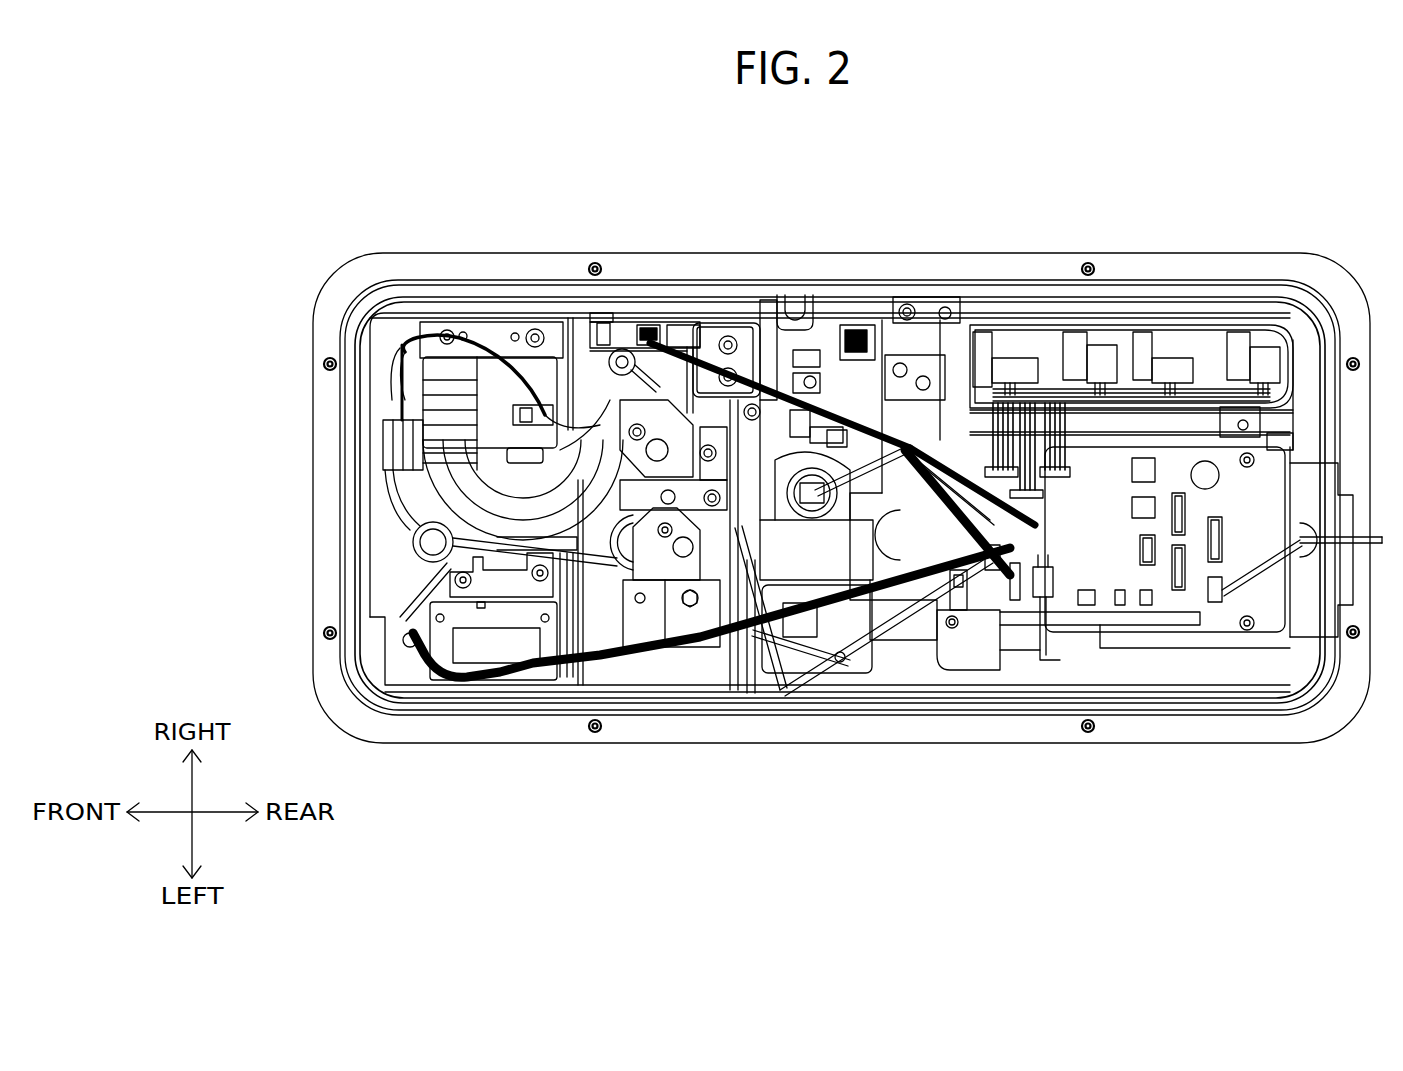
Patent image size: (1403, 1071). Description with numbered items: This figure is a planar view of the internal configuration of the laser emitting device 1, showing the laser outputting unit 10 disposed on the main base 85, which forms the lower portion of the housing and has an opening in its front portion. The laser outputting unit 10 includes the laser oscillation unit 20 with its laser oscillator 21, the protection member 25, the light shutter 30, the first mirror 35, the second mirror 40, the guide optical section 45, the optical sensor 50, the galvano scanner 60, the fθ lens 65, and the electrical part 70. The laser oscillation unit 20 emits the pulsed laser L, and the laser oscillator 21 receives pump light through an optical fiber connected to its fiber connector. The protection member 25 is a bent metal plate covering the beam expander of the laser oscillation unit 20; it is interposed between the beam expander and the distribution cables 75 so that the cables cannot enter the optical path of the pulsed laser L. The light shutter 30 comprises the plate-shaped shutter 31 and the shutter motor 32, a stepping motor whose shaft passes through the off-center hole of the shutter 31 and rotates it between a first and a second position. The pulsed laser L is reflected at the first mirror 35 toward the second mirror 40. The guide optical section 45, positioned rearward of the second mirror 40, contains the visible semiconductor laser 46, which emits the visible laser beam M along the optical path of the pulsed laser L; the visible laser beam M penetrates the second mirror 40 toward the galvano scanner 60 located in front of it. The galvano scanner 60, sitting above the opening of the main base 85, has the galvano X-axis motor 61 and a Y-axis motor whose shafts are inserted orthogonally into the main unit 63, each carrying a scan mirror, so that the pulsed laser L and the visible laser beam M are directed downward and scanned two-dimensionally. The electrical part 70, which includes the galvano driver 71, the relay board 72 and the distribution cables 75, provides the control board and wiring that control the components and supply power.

The laser emitting device 1 is at (1314, 203).
The laser outputting unit 10 is at (888, 560).
The laser oscillation unit 20 is at (1082, 637).
The laser oscillator 21 is at (1012, 600).
The protection member 25 is at (990, 575).
The light shutter 30 is at (762, 700).
The shutter 31 is at (740, 640).
The shutter motor 32 is at (790, 690).
The first mirror 35 is at (658, 557).
The second mirror 40 is at (652, 318).
The guide optical section 45 is at (887, 300).
The visible semiconductor laser 46 is at (800, 345).
The optical sensor 50 is at (656, 322).
The galvano scanner 60 is at (395, 345).
The galvano X-axis motor 61 is at (535, 360).
The main unit 63 is at (455, 332).
The fθ lens 65 is at (502, 480).
The electrical part 70 is at (1131, 314).
The galvano driver 71 is at (1190, 327).
The relay board 72 is at (1232, 460).
The distribution cables 75 is at (714, 323).
The main base 85 is at (335, 428).
The pulsed laser L is at (560, 320).
The visible laser beam M is at (757, 330).